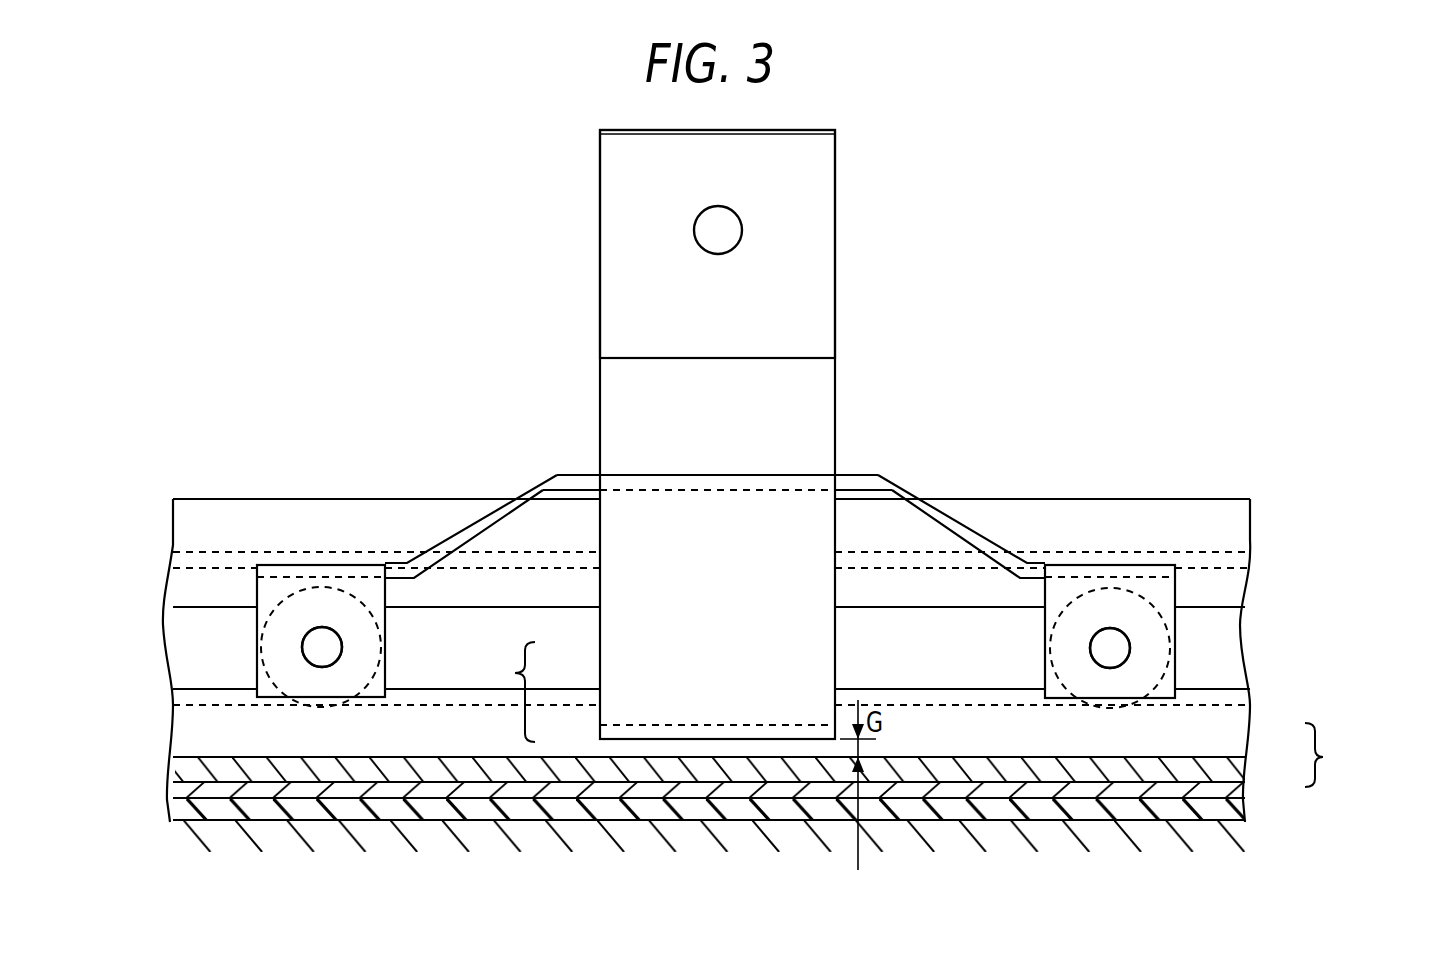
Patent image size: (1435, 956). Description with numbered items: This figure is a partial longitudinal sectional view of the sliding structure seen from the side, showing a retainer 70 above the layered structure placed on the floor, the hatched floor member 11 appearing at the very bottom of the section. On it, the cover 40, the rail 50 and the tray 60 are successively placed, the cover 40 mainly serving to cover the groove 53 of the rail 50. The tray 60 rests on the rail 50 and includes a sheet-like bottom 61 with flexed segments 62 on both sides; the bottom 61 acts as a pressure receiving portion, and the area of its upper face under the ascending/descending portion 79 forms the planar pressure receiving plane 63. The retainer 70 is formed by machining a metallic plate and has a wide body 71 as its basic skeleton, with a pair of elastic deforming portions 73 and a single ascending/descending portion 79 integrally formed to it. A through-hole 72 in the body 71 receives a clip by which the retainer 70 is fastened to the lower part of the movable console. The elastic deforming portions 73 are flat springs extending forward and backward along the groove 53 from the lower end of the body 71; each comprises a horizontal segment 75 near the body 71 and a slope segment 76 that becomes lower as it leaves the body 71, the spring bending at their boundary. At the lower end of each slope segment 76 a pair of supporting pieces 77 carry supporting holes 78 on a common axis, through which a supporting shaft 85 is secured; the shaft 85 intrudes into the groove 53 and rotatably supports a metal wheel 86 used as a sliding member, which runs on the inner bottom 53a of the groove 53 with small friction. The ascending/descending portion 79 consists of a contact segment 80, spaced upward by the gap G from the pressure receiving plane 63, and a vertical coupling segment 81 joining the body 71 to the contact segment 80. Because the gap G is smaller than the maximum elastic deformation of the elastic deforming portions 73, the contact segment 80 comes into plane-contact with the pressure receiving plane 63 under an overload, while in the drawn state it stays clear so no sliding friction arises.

The substrate 11 is at (202, 835).
The cover 40 is at (1250, 512).
The rail 50 is at (1243, 791).
The groove 53 is at (1240, 636).
The inner bottom of the groove 53a is at (1240, 705).
The tray 60 is at (1348, 757).
The bottom 61 is at (1238, 770).
The flexed segment 62 is at (1235, 738).
The pressure receiving plane 63 is at (193, 757).
The retainer 70 is at (706, 436).
The body 71 is at (820, 300).
The through-hole 72 is at (700, 222).
The elastic deforming portion 73 is at (715, 488).
The horizontal segment 75 is at (556, 470).
The slope segment 76 is at (518, 448).
The supporting piece 77 is at (385, 627).
The supporting hole 78 is at (310, 640).
The ascending/descending portion 79 is at (509, 692).
The contact segment 80 is at (600, 728).
The coupling segment 81 is at (612, 663).
The supporting shaft 85 is at (325, 662).
The wheel 86 is at (268, 685).